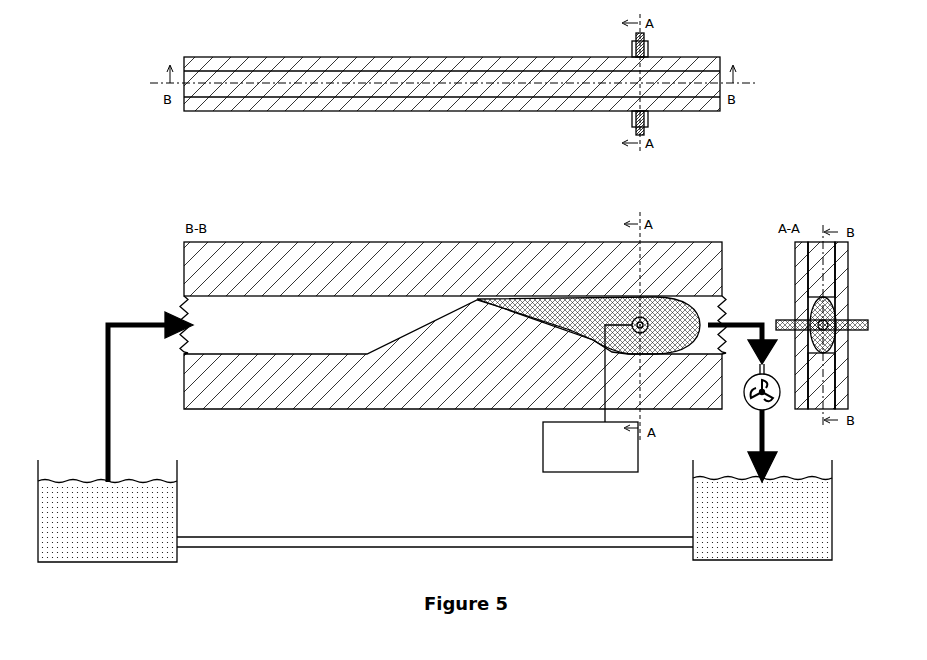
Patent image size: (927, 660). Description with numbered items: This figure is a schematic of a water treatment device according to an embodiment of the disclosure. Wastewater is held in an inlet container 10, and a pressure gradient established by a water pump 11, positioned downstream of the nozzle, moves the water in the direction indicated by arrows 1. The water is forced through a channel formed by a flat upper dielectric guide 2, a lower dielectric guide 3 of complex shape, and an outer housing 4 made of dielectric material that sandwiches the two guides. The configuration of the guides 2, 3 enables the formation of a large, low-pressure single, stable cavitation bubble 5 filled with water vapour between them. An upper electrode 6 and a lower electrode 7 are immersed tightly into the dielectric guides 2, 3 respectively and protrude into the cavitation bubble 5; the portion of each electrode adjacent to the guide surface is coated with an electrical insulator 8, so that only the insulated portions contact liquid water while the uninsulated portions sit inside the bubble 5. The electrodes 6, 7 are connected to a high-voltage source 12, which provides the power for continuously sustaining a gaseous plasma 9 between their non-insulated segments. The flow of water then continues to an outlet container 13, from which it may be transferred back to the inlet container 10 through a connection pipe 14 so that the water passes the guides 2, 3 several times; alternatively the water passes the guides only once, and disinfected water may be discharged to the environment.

The arrow indicating water flow direction 1 is at (164, 318).
The upper dielectric guide 2 is at (305, 250).
The lower dielectric guide 3 is at (327, 388).
The outer housing 4 is at (842, 276).
The single, stable cavitation bubble 5 is at (520, 296).
The upper electrode 6 is at (640, 317).
The lower electrode 7 is at (780, 320).
The electrical insulator 8 is at (645, 333).
The gaseous plasma 9 is at (632, 320).
The inlet container 10 is at (148, 500).
The water pump 11 is at (752, 402).
The high-voltage source 12 is at (585, 460).
The outlet container 13 is at (725, 495).
The connection pipe 14 is at (396, 536).